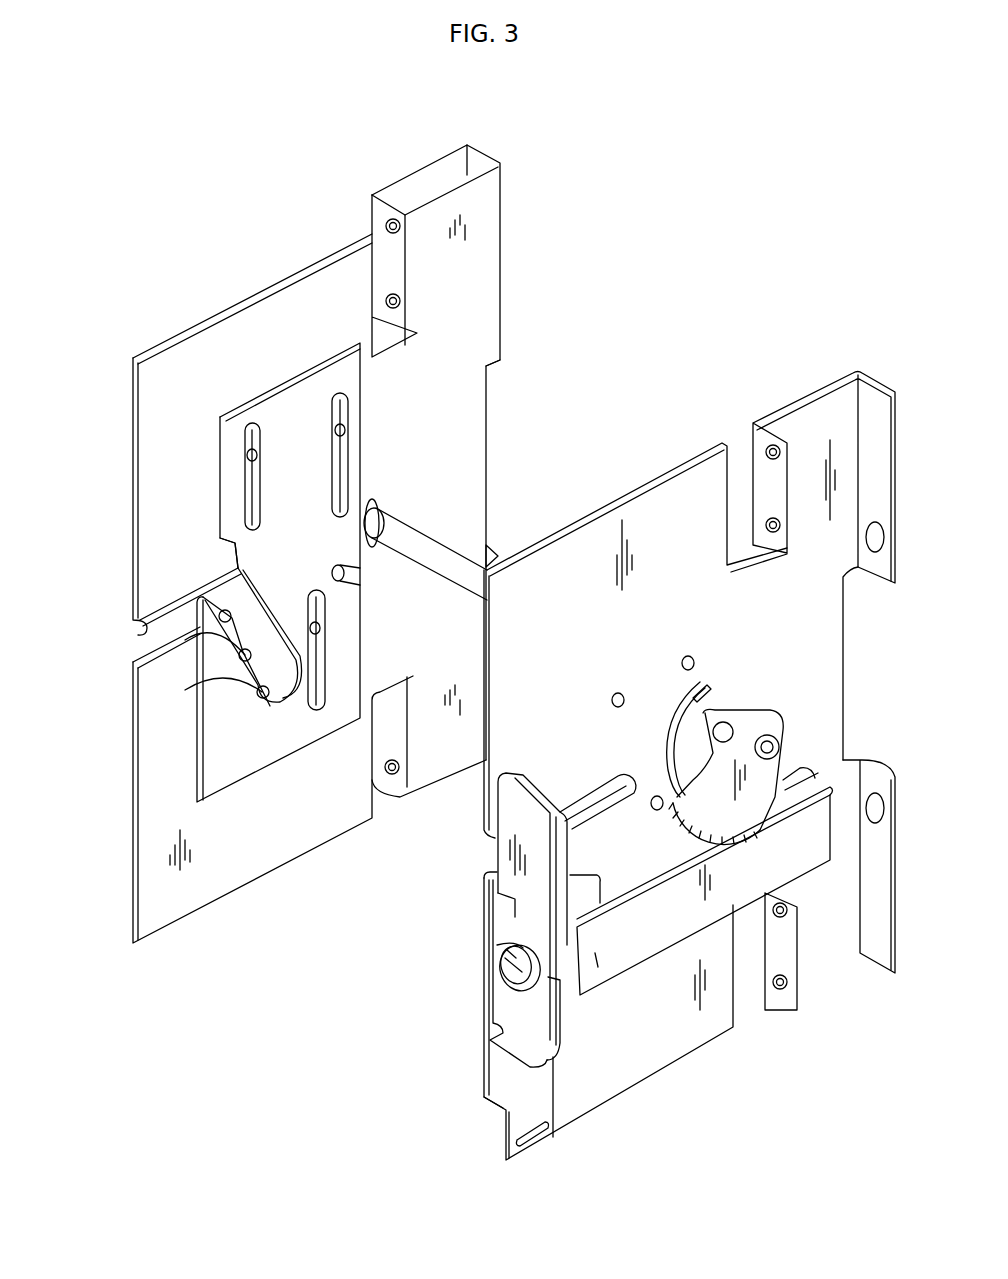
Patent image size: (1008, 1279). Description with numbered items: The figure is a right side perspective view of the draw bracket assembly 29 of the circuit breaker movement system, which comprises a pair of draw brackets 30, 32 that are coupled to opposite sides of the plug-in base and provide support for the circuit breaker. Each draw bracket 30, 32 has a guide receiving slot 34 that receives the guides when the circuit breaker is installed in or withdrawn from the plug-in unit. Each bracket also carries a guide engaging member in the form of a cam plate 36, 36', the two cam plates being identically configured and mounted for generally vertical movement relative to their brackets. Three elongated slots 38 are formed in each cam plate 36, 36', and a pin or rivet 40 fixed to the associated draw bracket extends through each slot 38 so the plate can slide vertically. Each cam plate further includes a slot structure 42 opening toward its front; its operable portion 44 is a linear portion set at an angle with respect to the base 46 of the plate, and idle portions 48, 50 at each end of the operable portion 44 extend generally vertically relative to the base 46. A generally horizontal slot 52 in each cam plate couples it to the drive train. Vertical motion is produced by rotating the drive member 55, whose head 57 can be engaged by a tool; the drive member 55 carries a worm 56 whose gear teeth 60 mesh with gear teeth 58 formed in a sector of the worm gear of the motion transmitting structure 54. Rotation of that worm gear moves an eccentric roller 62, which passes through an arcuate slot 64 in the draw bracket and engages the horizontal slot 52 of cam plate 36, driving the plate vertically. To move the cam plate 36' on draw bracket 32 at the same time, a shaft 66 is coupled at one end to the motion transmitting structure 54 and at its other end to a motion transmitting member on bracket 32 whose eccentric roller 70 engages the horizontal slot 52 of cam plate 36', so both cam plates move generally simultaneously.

The draw bracket assembly 29 is at (709, 258).
The draw bracket 30 is at (820, 632).
The draw bracket 32 is at (278, 305).
The guide receiving slot 34 is at (145, 627).
The cam plate 36 is at (536, 897).
The cam plate 36' is at (278, 568).
The elongated slot 38 is at (245, 480).
The pin or rivet 40 is at (258, 452).
The slot structure 42 is at (217, 585).
The operable portion 44 is at (248, 672).
The base 46 is at (248, 782).
The idle portion 48 is at (232, 558).
The idle portion 50 is at (262, 700).
The horizontal slot 52 is at (357, 585).
The motion transmitting structure 54 is at (780, 705).
The drive member 55 is at (628, 897).
The worm 56 is at (780, 820).
The head 57 is at (577, 993).
The gear teeth 58 is at (680, 838).
The gear teeth 60 is at (810, 790).
The eccentric roller 62 is at (670, 690).
The arcuate slot 64 is at (708, 690).
The shaft 66 is at (440, 553).
The eccentric roller 70 is at (340, 573).